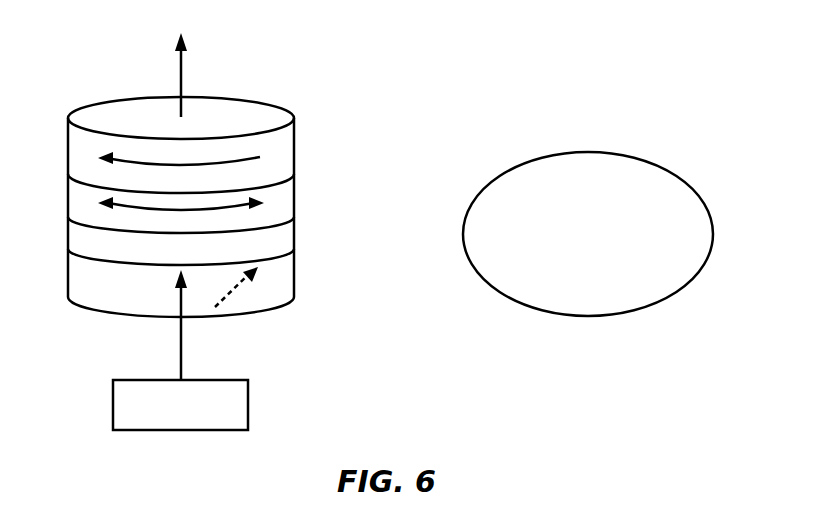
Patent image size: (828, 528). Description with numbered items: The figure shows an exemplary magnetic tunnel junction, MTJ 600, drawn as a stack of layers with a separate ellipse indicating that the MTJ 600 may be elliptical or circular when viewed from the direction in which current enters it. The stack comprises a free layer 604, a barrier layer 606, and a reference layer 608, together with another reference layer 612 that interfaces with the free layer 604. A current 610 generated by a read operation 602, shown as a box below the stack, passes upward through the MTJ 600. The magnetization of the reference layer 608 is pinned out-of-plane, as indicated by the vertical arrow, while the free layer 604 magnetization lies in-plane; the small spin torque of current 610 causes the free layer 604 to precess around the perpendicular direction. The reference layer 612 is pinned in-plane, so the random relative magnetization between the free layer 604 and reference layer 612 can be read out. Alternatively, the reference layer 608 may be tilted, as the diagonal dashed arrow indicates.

The MTJ 600 is at (115, 81).
The read operation 602 is at (227, 380).
The free layer 604 is at (295, 194).
The barrier layer 606 is at (295, 225).
The reference layer 608 is at (295, 267).
The current 610 is at (182, 68).
The reference layer 612 is at (295, 151).